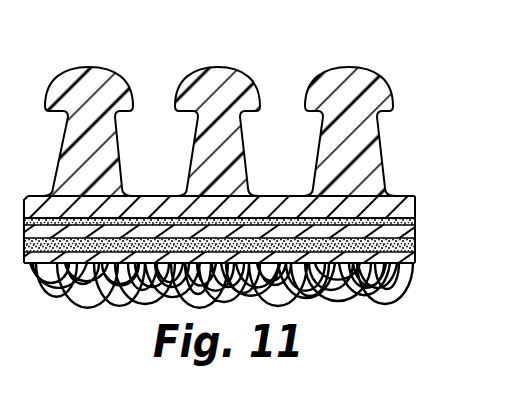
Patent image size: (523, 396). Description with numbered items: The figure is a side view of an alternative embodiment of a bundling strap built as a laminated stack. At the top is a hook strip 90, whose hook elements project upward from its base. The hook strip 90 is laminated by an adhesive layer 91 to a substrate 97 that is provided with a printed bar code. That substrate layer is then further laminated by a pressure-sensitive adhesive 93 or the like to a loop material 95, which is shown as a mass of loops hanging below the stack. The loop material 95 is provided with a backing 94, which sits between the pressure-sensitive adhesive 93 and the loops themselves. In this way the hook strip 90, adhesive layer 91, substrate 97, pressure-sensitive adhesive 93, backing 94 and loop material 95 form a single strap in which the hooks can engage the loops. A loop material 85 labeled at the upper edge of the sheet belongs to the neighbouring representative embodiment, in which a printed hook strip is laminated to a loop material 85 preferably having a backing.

The loop material 85 is at (55, 0).
The hook strip 90 is at (382, 61).
The adhesive layer 91 is at (418, 220).
The substrate 97 is at (416, 232).
The pressure-sensitive adhesive 93 is at (417, 245).
The backing 94 is at (418, 258).
The loop material 95 is at (402, 302).